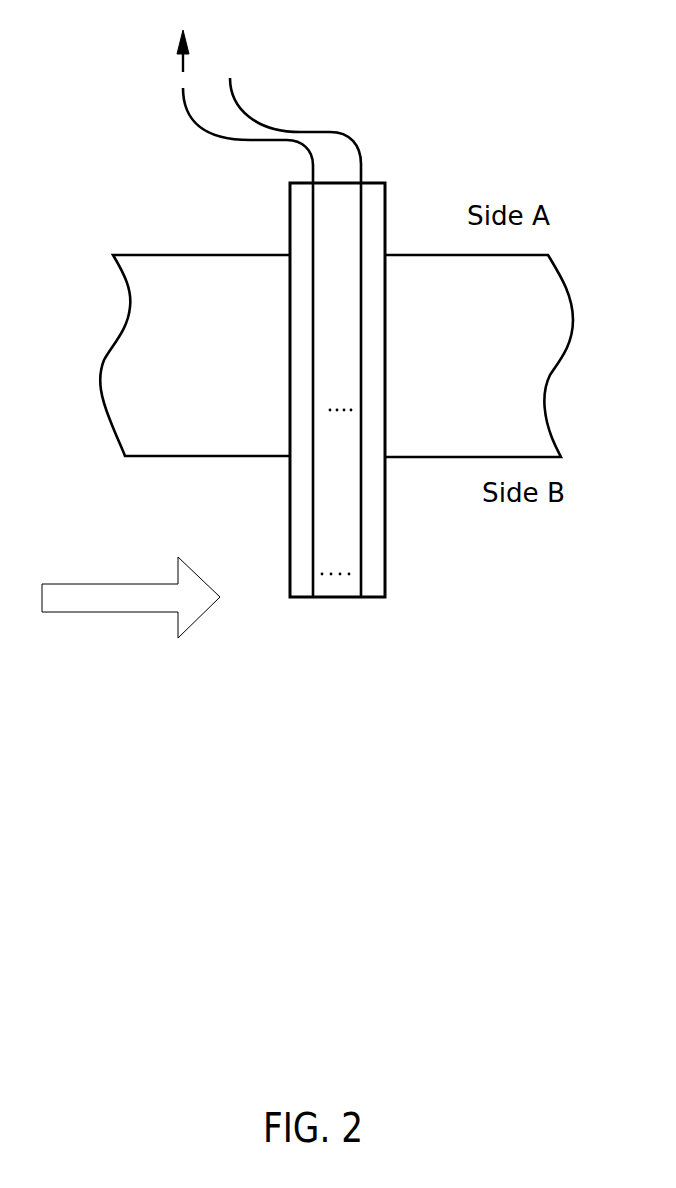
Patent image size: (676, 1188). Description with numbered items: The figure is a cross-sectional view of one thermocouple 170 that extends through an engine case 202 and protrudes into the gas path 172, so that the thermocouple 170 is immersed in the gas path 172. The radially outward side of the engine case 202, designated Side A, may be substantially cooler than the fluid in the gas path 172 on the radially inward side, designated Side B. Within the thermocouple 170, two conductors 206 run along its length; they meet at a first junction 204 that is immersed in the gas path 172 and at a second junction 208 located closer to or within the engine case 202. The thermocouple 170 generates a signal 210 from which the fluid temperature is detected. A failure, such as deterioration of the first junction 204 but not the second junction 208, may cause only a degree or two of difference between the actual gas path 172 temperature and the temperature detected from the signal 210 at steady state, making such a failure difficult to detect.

The thermocouple 170 is at (383, 213).
The gas path 172 is at (63, 590).
The engine case 202 is at (153, 253).
The first junction 204 is at (350, 576).
The conductors 206 is at (242, 137).
The second junction 208 is at (322, 410).
The signal 210 is at (183, 64).